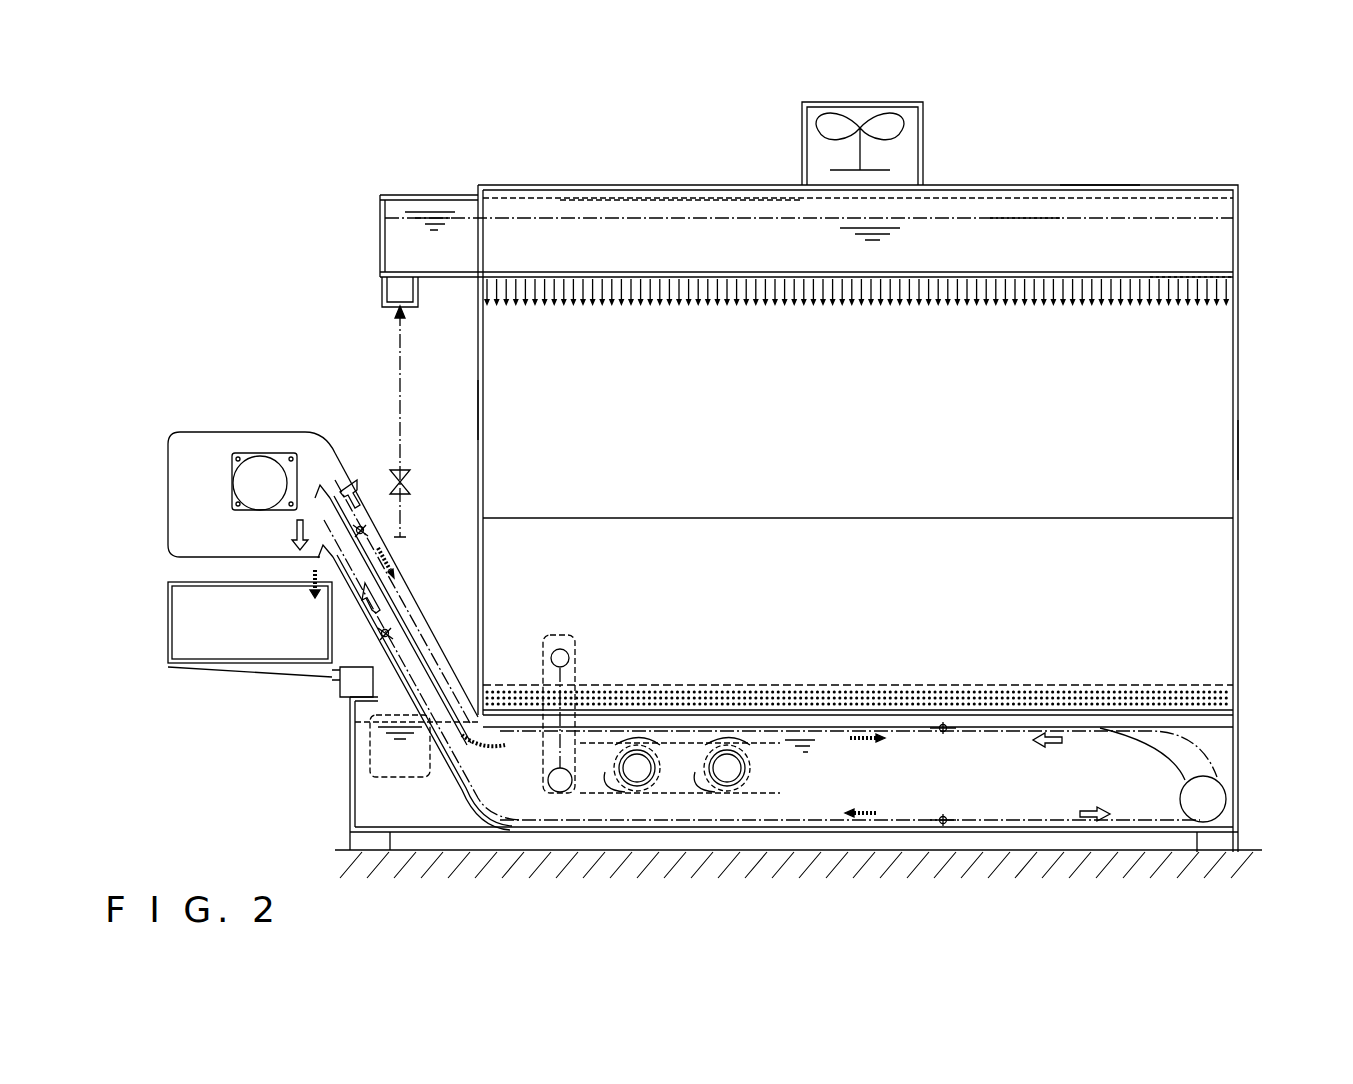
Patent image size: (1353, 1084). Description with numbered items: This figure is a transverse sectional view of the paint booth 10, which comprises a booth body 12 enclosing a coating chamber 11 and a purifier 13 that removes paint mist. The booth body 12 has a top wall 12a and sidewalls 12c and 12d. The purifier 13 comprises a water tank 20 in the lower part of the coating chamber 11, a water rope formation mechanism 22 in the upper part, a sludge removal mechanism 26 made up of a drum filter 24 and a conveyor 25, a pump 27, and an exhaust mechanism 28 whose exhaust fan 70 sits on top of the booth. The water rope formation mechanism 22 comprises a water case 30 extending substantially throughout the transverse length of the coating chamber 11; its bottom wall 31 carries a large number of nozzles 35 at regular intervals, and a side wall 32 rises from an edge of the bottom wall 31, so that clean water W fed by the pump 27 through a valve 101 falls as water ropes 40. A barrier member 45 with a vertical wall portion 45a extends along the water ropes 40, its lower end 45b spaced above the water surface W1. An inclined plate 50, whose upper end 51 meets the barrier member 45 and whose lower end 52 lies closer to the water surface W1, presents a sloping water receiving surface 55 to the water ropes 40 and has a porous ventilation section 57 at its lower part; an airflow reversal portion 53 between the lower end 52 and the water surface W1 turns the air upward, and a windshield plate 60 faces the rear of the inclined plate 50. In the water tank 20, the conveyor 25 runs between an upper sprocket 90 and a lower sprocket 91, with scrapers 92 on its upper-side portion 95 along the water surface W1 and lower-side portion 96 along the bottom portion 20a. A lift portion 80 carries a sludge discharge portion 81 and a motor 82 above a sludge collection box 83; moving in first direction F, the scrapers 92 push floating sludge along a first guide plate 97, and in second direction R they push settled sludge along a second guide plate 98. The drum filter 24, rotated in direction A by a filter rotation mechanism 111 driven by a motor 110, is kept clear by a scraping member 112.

The paint booth 10 is at (540, 132).
The coating chamber 11 is at (852, 376).
The booth body 12 is at (648, 182).
The top wall 12a is at (1100, 185).
The sidewall 12c is at (478, 412).
The sidewall 12d is at (1238, 447).
The purifier 13 is at (305, 374).
The water tank 20 is at (793, 832).
The bottom portion 20a is at (826, 826).
The water rope formation mechanism 22 is at (1146, 323).
The drum filter 24 is at (640, 795).
The conveyor 25 is at (1198, 746).
The sludge removal mechanism 26 is at (668, 724).
The pump 27 is at (382, 757).
The exhaust mechanism 28 is at (927, 118).
The water case 30 is at (1236, 230).
The bottom wall 31 is at (1208, 275).
The side wall 32 is at (692, 208).
The nozzles 35 is at (1225, 282).
The water ropes 40 is at (1225, 292).
The barrier member 45 is at (1173, 487).
The wall portion 45a is at (1180, 378).
The lower end 45b is at (1238, 692).
The inclined plate 50 is at (1175, 595).
The upper end 51 is at (955, 518).
The lower end 52 is at (905, 715).
The airflow reversal portion 53 is at (1213, 720).
The water receiving surface 55 is at (864, 658).
The porous ventilation section 57 is at (1068, 690).
The windshield plate 60 is at (1093, 722).
The exhaust fan 70 is at (905, 140).
The lift portion 80 is at (357, 673).
The sludge discharge portion 81 is at (300, 555).
The motor 82 is at (262, 452).
The sludge collection box 83 is at (170, 635).
The upper sprocket 90 is at (245, 478).
The lower sprocket 91 is at (1215, 803).
The scrapers 92 is at (950, 730).
The upper-side portion 95 is at (903, 732).
The lower-side portion 96 is at (910, 816).
The first guide plate 97 is at (412, 635).
The second guide plate 98 is at (397, 678).
The valve 101 is at (412, 482).
The motor 110 is at (580, 642).
The filter rotation mechanism 111 is at (531, 653).
The scraping member 112 is at (600, 775).
The rotation direction of drum filter A is at (648, 738).
The first direction F is at (1047, 748).
The second direction R is at (851, 748).
The water W is at (1027, 218).
The water surface W1 is at (787, 727).